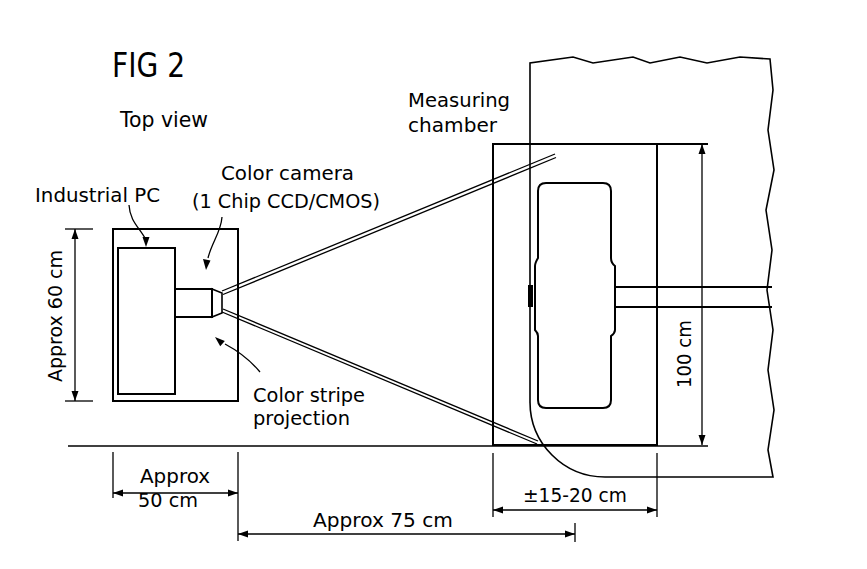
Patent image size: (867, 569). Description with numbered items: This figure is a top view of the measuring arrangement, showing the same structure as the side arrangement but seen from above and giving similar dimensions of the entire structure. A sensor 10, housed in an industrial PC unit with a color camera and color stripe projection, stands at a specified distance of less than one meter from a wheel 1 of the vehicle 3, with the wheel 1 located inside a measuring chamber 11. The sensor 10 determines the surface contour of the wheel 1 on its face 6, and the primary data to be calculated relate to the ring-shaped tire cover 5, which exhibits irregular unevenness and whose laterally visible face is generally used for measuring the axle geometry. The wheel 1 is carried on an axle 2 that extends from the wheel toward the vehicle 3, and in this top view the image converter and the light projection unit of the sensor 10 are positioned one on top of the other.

The wheel 1 is at (581, 172).
The axle 2 is at (745, 288).
The vehicle 3 is at (692, 103).
The tire cover 5 is at (605, 228).
The face 6 is at (515, 317).
The sensor 10 is at (114, 408).
The measuring chamber 11 is at (548, 130).